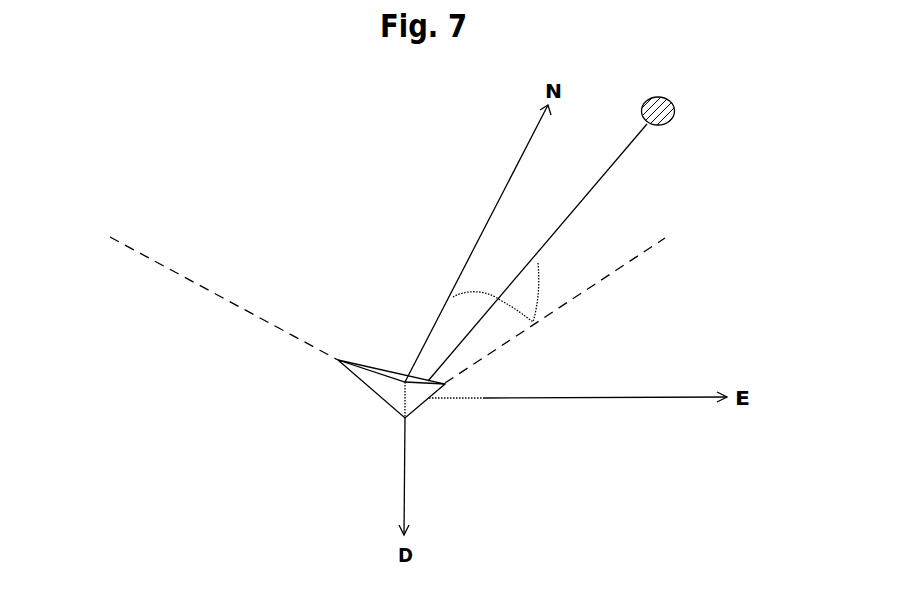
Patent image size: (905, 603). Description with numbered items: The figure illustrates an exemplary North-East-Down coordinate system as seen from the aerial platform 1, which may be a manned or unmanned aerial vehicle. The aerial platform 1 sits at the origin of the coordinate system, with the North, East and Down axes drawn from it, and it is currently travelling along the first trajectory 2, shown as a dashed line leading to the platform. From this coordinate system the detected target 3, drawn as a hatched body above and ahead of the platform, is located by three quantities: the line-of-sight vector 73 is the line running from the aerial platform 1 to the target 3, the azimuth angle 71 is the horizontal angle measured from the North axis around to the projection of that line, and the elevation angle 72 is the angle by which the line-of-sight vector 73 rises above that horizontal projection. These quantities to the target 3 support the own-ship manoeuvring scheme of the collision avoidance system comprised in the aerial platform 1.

The aerial platform 1 is at (390, 412).
The first trajectory 2 is at (150, 260).
The target 3 is at (657, 97).
The azimuth angle 71 is at (480, 292).
The elevation angle 72 is at (538, 265).
The line-of-sight (LOS) vector 73 is at (608, 163).